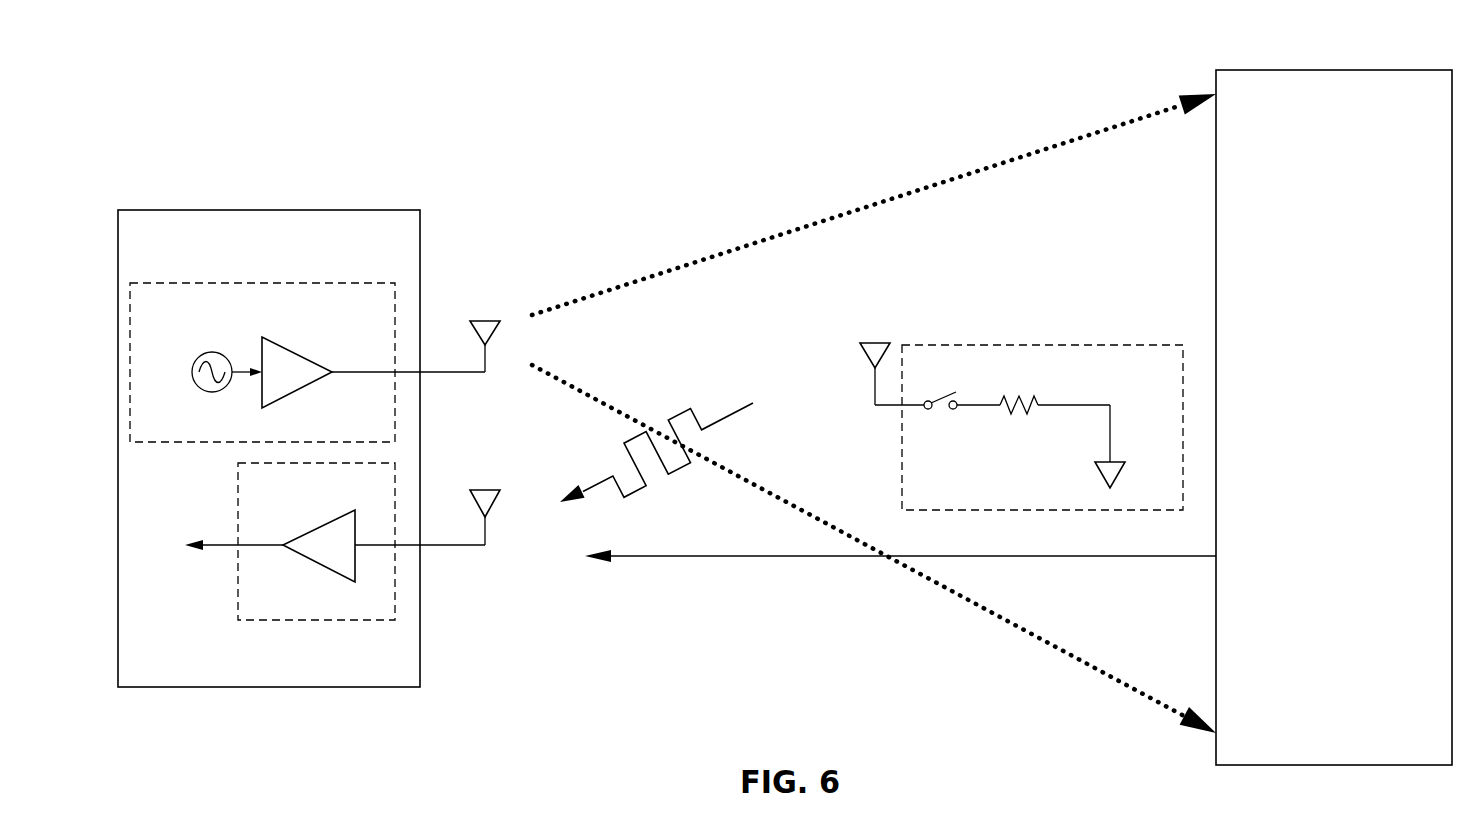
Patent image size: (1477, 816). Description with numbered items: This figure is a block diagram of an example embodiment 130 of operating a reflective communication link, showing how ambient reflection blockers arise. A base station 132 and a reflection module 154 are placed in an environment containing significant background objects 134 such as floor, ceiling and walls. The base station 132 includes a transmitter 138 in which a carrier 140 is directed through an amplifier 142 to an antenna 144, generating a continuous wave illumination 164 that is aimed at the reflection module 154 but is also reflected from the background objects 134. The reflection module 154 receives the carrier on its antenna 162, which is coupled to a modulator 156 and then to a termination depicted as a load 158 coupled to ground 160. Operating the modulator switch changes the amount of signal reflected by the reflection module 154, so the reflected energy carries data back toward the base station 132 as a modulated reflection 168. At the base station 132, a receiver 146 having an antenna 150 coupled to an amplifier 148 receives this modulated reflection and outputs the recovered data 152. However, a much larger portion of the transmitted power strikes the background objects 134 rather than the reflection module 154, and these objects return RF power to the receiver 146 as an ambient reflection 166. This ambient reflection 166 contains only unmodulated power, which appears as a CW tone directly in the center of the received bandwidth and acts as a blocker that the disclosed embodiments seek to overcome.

The embodiment of operating the reflective link 130 is at (192, 96).
The base station 132 is at (400, 210).
The background objects 134 is at (1345, 67).
The transmitter 138 is at (270, 282).
The carrier 140 is at (212, 392).
The amplifier 142 is at (305, 390).
The antenna 144 is at (498, 327).
The receiver 146 is at (280, 622).
The amplifier 148 is at (340, 575).
The antenna 150 is at (498, 505).
The receiver output 152 is at (220, 547).
The reflection module 154 is at (1092, 343).
The modulator 156 is at (930, 412).
The load 158 is at (1017, 413).
The ground 160 is at (1110, 455).
The antenna 162 is at (876, 338).
The continuous wave (CW) illumination 164 is at (715, 250).
The ambient reflection 166 is at (1085, 556).
The modulated reflection 168 is at (727, 420).